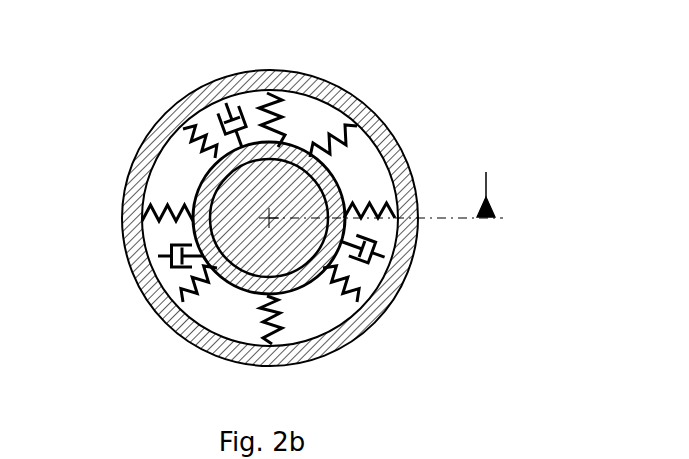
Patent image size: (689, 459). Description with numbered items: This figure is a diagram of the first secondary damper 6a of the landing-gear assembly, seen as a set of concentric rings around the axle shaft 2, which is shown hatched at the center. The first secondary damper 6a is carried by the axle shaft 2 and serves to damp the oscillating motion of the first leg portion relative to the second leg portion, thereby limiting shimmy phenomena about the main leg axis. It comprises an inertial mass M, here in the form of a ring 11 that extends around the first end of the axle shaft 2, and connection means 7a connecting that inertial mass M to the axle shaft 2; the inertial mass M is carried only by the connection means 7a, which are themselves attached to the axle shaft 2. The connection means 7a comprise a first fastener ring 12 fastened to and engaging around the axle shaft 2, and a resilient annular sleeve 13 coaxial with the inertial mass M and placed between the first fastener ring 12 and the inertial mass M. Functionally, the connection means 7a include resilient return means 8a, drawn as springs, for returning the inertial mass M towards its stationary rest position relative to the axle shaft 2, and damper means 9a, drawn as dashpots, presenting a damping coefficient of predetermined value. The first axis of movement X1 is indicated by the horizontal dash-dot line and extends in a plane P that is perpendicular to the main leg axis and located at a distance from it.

The axle shaft 2 is at (289, 180).
The first secondary damper 6a is at (150, 142).
The connection means 7a is at (295, 317).
The resilient return means 8a is at (156, 205).
The damper means 9a is at (213, 118).
The ring 11 is at (347, 317).
The first fastener ring 12 is at (372, 262).
The resilient annular sleeve 13 is at (238, 312).
The inertial mass M is at (132, 265).
The first axis of movement X1 is at (435, 217).
The plane P is at (486, 182).